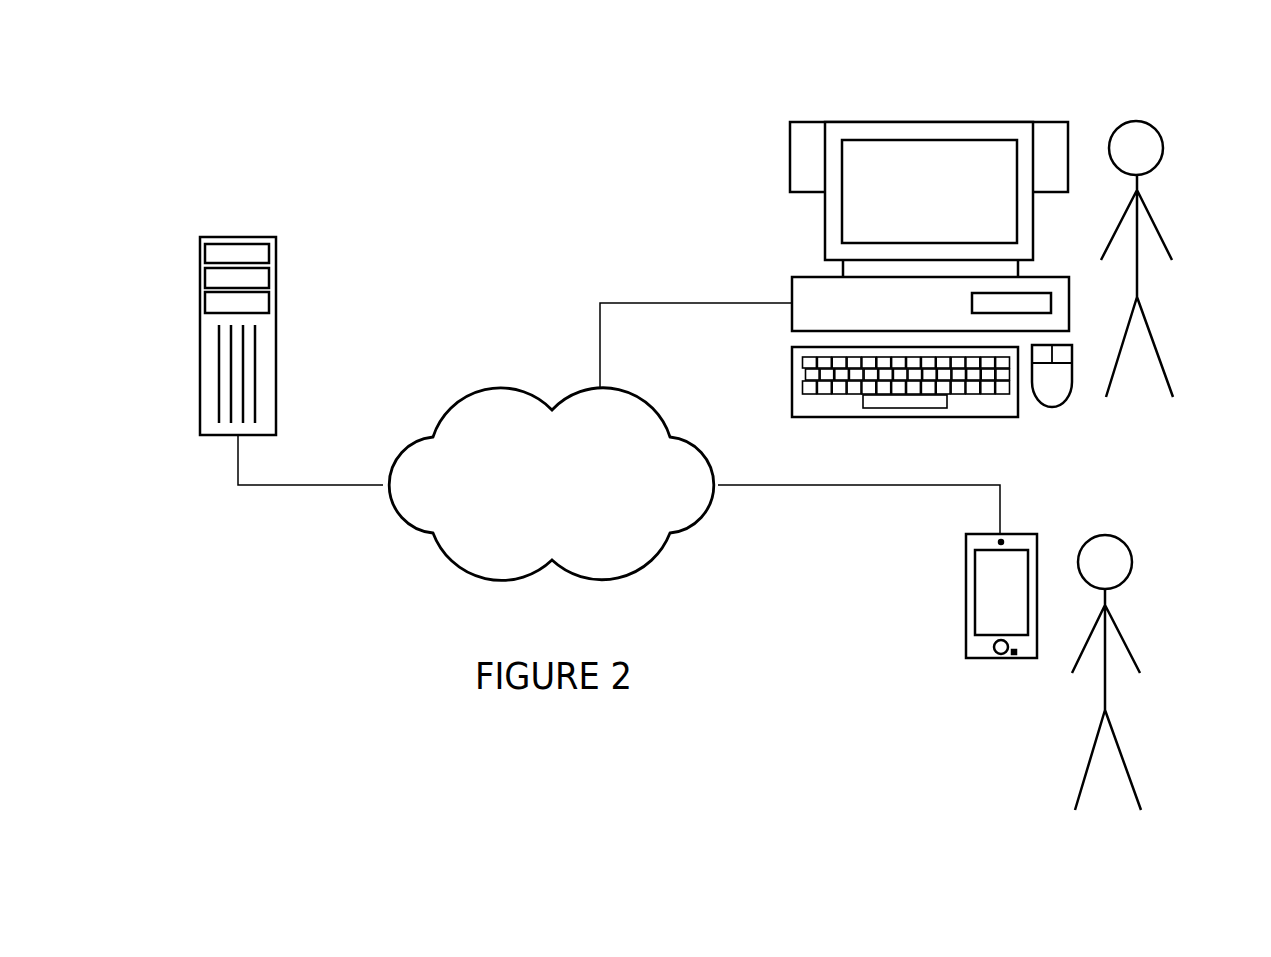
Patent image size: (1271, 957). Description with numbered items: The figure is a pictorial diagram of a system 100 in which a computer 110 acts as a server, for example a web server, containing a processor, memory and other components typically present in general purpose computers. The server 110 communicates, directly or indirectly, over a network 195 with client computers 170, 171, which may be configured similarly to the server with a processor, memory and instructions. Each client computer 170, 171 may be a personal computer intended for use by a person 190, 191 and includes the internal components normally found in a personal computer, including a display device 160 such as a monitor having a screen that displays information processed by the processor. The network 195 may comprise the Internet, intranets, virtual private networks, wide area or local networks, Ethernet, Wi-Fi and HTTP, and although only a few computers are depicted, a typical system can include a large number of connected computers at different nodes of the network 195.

The system 100 is at (307, 107).
The computer 110 is at (200, 247).
The network 195 is at (500, 388).
The client computer 170 is at (792, 229).
The display device 160 is at (948, 140).
The person 190 is at (1163, 206).
The client computer 171 is at (966, 557).
The person 191 is at (1130, 604).